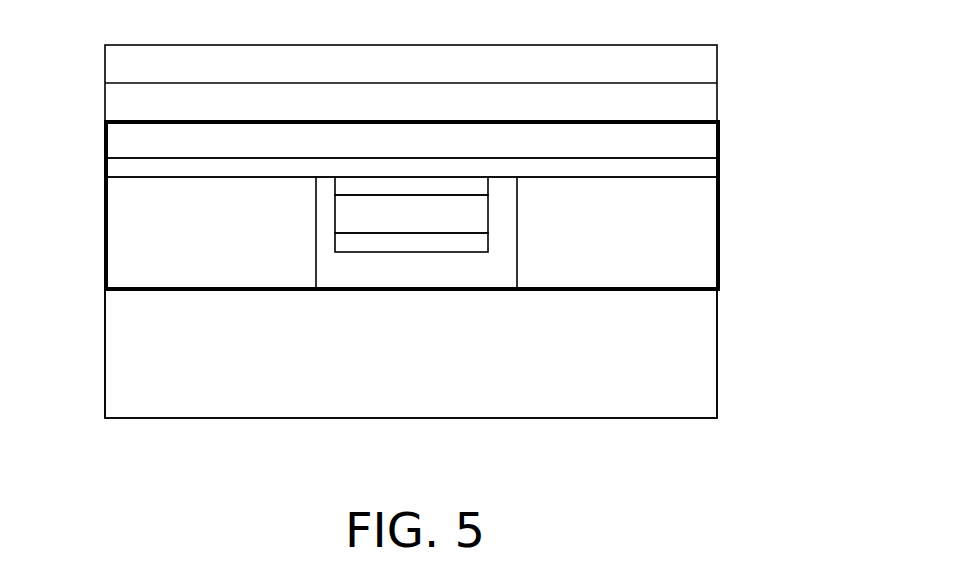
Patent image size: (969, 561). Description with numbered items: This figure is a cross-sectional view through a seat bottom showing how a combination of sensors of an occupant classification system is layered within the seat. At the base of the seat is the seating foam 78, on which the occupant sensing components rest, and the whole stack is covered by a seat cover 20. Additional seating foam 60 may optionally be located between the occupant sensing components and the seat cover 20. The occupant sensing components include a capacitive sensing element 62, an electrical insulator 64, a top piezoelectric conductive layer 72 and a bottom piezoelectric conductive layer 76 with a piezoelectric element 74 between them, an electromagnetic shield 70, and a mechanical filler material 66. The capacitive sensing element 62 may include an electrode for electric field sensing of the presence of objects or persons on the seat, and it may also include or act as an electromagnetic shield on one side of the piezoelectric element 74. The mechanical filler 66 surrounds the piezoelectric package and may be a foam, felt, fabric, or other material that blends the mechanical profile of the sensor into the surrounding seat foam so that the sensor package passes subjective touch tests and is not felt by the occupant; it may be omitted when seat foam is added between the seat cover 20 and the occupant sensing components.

The seat cover 20 is at (698, 64).
The additional seating foam 60 is at (689, 102).
The capacitive sensing element 62 is at (699, 139).
The electrical insulator 64 is at (699, 167).
The mechanical filler material 66 is at (699, 192).
The electromagnetic shield 70 is at (336, 277).
The top piezoelectric conductive layer 72 is at (454, 186).
The piezoelectric element 74 is at (450, 215).
The bottom piezoelectric conductive layer 76 is at (450, 242).
The seating foam 78 is at (691, 344).